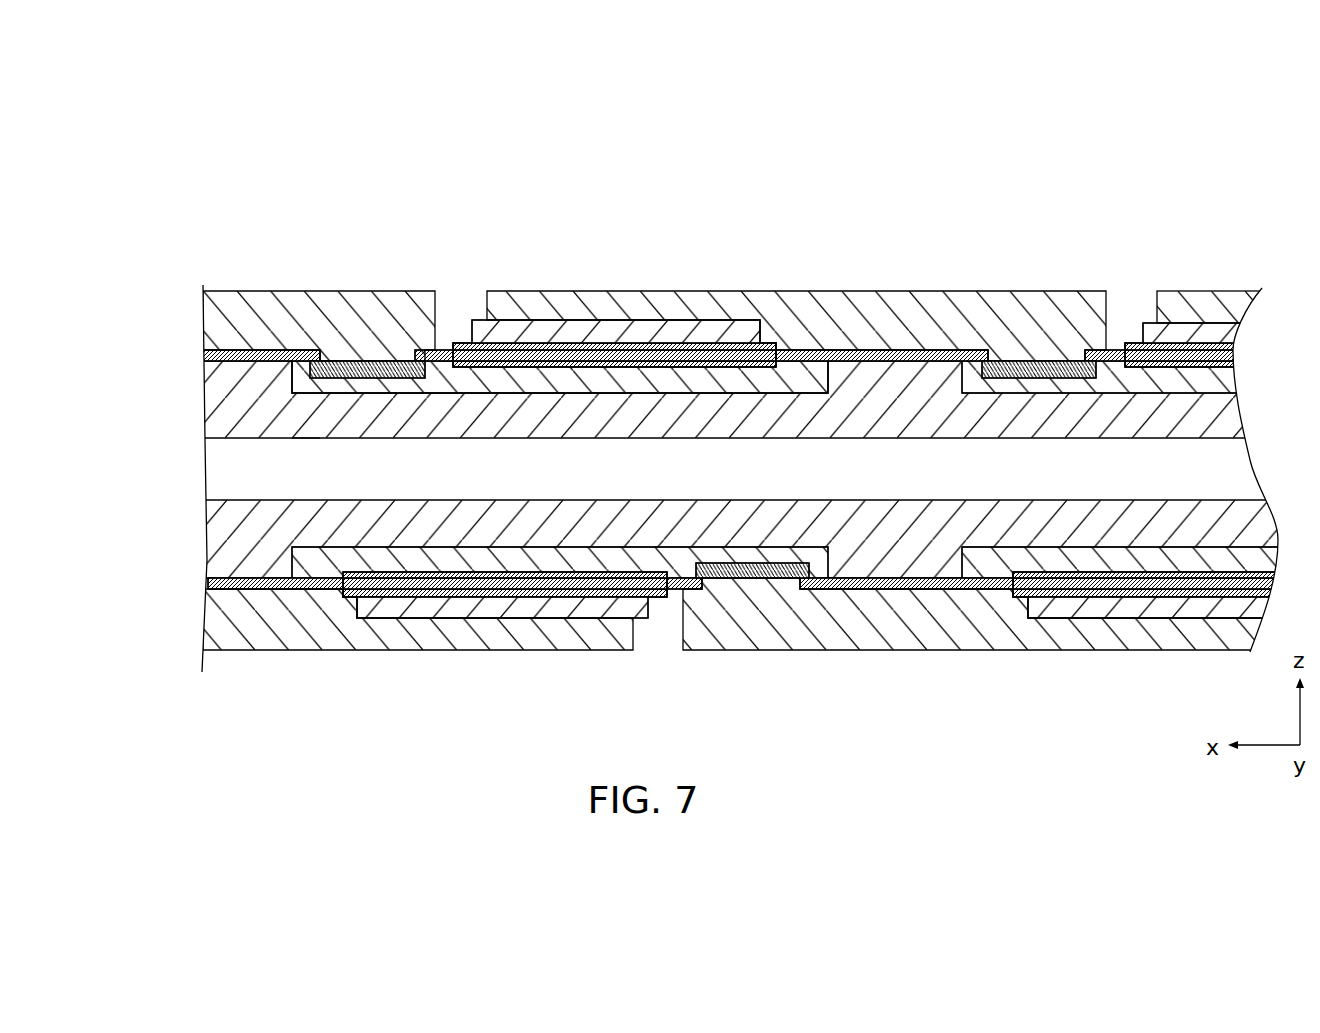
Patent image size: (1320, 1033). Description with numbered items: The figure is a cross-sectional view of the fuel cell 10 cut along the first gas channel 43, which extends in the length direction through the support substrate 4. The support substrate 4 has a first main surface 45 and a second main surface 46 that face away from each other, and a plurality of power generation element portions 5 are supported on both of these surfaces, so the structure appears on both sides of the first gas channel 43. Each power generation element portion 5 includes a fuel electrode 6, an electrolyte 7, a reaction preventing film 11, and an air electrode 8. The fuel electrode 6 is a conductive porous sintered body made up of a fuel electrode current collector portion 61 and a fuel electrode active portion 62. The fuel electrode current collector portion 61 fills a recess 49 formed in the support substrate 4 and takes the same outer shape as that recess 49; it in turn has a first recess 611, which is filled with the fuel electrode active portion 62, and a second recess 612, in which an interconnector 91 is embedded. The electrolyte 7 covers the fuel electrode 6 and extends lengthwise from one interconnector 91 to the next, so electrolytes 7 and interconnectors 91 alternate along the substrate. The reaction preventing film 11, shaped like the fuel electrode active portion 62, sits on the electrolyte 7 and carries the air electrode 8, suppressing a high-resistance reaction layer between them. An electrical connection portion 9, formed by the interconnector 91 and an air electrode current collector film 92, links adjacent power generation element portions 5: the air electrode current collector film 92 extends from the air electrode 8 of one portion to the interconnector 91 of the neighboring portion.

The fuel cell 10 is at (694, 406).
The support substrate 4 is at (203, 420).
The first gas channel 43 is at (320, 477).
The first main surface 45 is at (228, 349).
The second main surface 46 is at (256, 592).
The recess 49 is at (793, 393).
The power generation element portion 5 is at (553, 312).
The fuel electrode 6 is at (694, 373).
The fuel electrode current collector portion 61 is at (800, 380).
The first recess 611 is at (727, 360).
The second recess 612 is at (383, 356).
The fuel electrode active portion 62 is at (463, 380).
The electrolyte 7 is at (530, 343).
The air electrode 8 is at (634, 320).
The reaction preventing film 11 is at (582, 345).
The electrical connection portion 9 is at (654, 261).
The interconnector 91 is at (345, 356).
The air electrode current collector film 92 is at (258, 300).